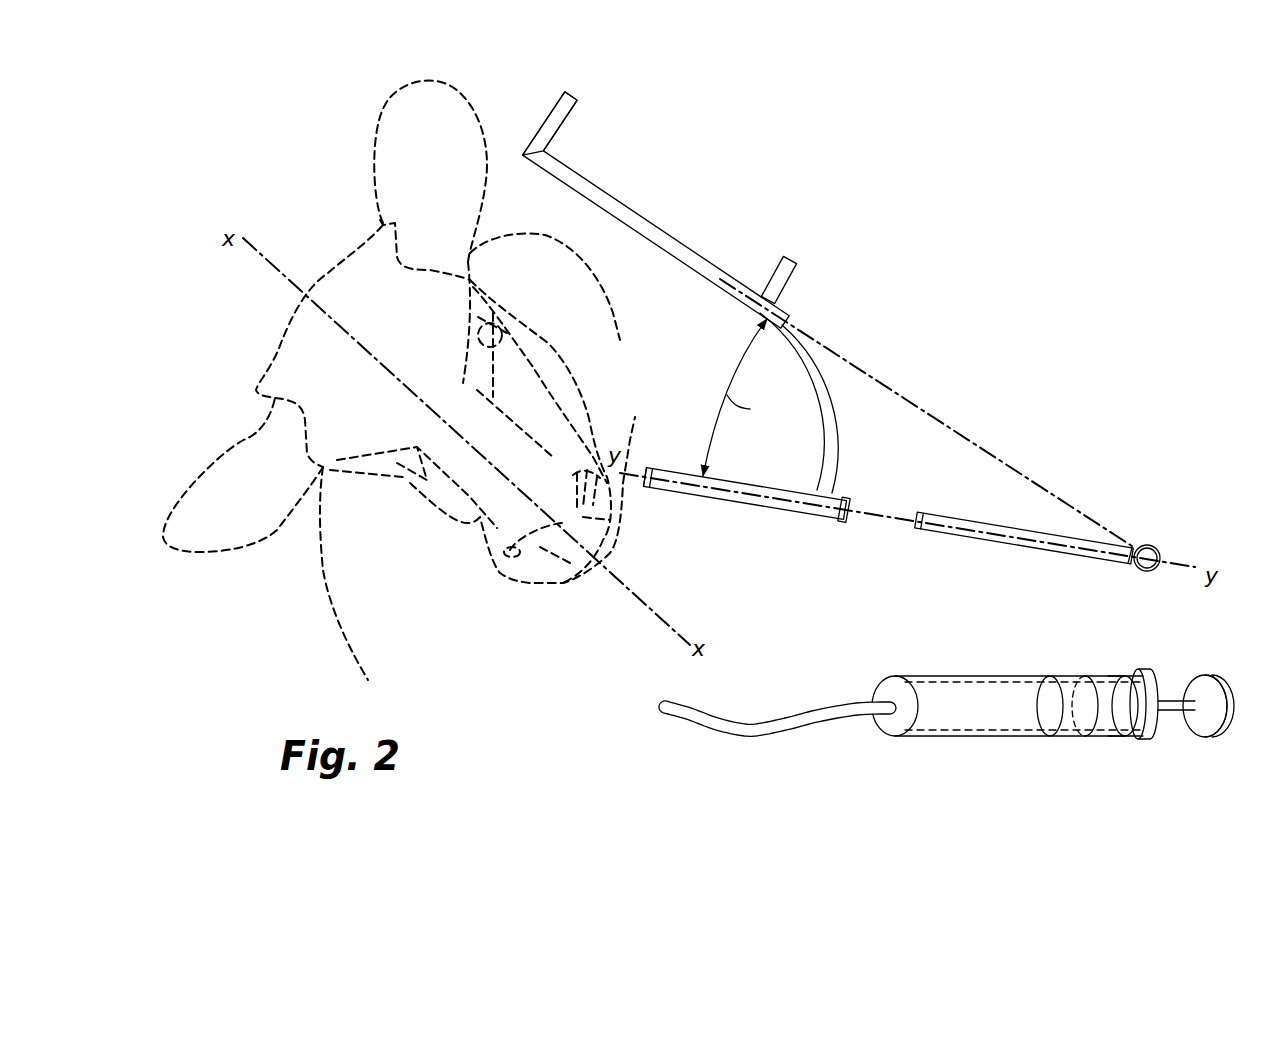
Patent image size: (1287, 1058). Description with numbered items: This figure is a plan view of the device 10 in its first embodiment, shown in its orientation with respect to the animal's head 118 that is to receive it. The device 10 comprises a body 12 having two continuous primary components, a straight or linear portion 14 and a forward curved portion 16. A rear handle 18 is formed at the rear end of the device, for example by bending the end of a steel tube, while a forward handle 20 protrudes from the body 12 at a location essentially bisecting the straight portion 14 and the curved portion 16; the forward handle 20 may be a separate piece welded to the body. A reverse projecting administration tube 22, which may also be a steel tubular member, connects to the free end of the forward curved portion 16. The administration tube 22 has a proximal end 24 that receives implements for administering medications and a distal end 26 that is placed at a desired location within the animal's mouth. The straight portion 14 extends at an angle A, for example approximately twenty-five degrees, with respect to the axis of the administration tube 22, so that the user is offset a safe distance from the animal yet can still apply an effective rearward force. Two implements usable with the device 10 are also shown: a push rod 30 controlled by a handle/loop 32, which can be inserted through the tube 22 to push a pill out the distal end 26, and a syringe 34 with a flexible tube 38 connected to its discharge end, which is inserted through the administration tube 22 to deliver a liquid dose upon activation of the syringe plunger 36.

The device 10 is at (903, 289).
The body 12 is at (707, 212).
The straight portion 14 is at (630, 220).
The forward curved portion 16 is at (840, 452).
The rear handle 18 is at (543, 127).
The forward handle 20 is at (768, 268).
The administration tube 22 is at (737, 495).
The proximal end 24 is at (845, 512).
The distal end 26 is at (648, 470).
The push rod 30 is at (1018, 548).
The handle/loop 32 is at (1163, 557).
The syringe 34 is at (1055, 680).
The syringe plunger 36 is at (1218, 735).
The flexible tube 38 is at (773, 730).
The animal's head 118 is at (432, 326).